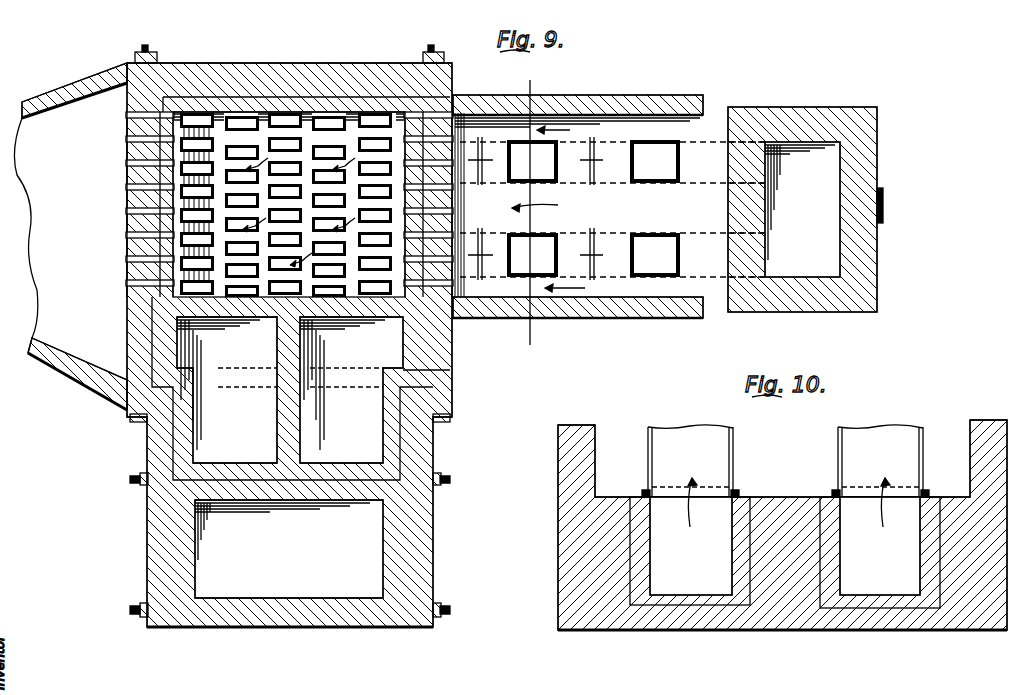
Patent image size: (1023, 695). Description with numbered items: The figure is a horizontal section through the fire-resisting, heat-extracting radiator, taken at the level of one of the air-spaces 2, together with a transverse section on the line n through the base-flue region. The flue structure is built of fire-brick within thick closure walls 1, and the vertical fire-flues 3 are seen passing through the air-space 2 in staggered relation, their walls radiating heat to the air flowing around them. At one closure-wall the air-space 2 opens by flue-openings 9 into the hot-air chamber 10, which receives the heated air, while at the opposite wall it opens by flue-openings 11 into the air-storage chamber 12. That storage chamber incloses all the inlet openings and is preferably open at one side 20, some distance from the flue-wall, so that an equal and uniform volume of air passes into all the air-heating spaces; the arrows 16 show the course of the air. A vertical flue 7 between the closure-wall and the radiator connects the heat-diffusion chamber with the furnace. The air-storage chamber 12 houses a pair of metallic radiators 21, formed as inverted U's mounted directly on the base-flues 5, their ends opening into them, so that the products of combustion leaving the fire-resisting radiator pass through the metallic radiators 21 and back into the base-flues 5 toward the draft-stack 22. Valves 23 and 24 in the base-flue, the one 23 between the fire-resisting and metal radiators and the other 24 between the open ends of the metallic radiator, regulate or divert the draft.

In FIG. 9, the closure walls 1 is at (118, 347).
In FIG. 9, the air-spaces 2 is at (310, 118).
In FIG. 9, the vertical fire-flues 3 is at (380, 113).
In FIG. 10, the base-flues 5 is at (782, 525).
In FIG. 9, the vertical flue 7 is at (290, 457).
In FIG. 9, the flue-openings 9 is at (98, 275).
In FIG. 9, the hot-air chamber 10 is at (70, 236).
In FIG. 9, the flue-openings 11 is at (462, 200).
In FIG. 9, the air-storage chamber 12 is at (613, 205).
In FIG. 9, the arrows 16 is at (710, 252).
In FIG. 9, the open side 20 is at (708, 105).
In FIG. 9, the metallic radiators 21 is at (600, 208).
In FIG. 10, the metallic radiators 21 is at (785, 461).
In FIG. 9, the draft-stack 22 is at (805, 209).
In FIG. 9, the valve 23 is at (522, 198).
In FIG. 9, the valve 24 is at (544, 201).
In FIG. 9, the section line n is at (529, 213).